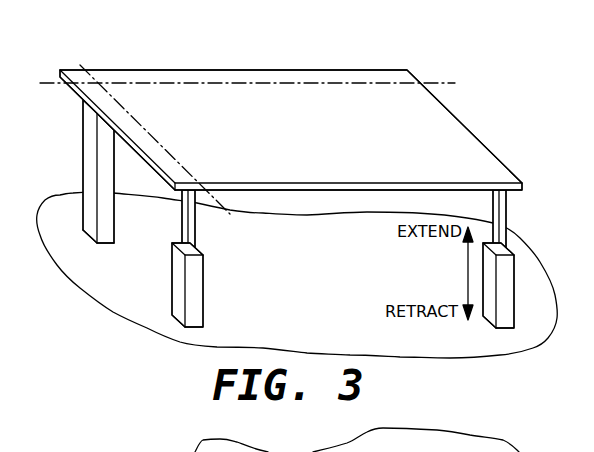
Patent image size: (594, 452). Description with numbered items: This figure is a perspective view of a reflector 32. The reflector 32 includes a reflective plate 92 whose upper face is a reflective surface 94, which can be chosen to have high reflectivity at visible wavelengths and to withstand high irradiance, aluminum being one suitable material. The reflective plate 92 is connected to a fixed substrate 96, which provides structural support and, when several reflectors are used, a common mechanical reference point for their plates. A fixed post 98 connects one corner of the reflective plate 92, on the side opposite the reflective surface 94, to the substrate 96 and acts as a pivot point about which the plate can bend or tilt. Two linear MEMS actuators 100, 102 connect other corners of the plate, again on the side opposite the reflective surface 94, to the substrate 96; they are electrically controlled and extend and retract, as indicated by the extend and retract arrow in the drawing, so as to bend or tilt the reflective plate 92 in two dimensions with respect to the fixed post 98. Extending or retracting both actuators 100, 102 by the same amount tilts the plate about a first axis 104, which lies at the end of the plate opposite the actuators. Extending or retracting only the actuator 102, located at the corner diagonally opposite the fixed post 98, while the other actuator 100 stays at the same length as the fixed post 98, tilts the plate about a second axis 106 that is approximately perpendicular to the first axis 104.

The reflector 32 is at (495, 110).
The reflective plate 92 is at (493, 155).
The reflective surface 94 is at (305, 132).
The fixed substrate 96 is at (345, 292).
The fixed post 98 is at (87, 162).
The linear MEMS actuator 100 is at (180, 275).
The linear MEMS actuator 102 is at (513, 272).
The first axis 104 is at (254, 73).
The second axis 106 is at (66, 50).